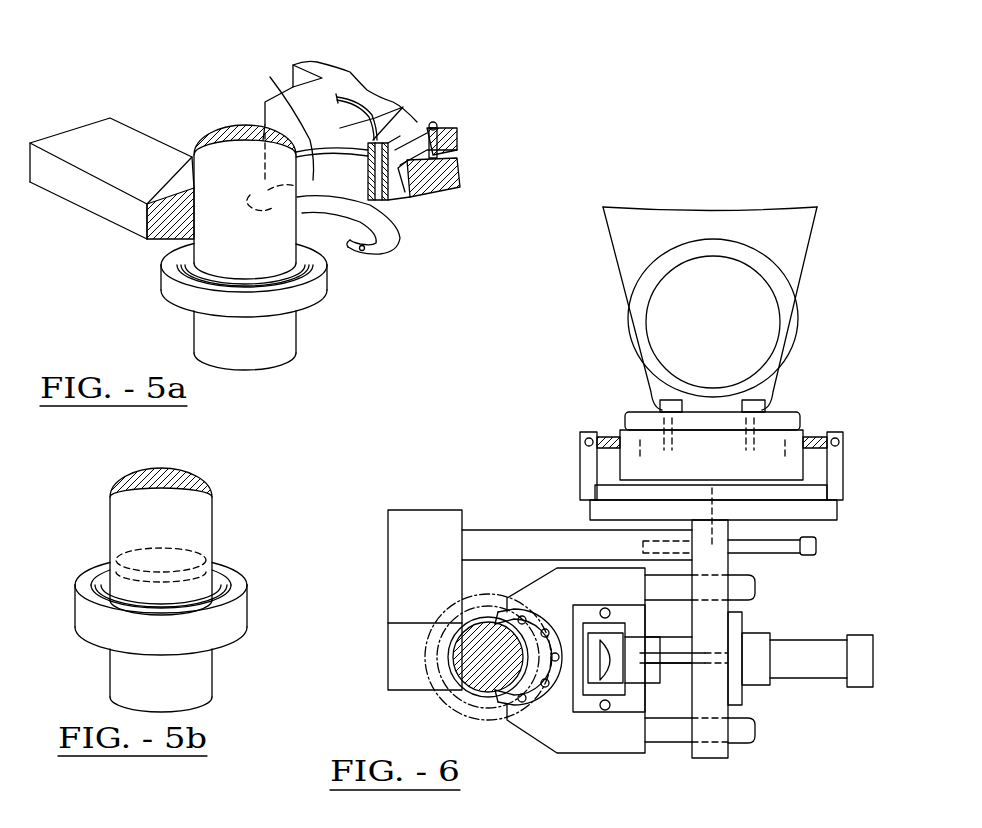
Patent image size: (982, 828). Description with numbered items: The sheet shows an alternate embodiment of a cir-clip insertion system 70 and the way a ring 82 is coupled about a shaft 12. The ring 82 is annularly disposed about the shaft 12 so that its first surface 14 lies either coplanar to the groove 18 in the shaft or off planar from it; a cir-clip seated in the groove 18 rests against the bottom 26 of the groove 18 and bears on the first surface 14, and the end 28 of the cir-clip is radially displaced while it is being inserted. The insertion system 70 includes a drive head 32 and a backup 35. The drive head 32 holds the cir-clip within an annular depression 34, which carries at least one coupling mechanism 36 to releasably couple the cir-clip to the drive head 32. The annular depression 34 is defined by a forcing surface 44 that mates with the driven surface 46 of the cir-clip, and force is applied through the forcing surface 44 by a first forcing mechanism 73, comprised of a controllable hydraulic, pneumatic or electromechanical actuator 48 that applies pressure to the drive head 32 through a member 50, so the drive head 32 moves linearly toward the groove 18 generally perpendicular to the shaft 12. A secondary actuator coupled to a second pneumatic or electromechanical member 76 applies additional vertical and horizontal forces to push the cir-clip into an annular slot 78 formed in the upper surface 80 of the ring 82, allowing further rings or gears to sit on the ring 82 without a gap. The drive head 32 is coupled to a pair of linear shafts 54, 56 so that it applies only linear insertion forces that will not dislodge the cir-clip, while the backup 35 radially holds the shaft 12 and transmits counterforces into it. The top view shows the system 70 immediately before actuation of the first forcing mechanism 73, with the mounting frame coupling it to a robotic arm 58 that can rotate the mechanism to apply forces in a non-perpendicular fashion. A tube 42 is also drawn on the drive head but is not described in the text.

In FIG. 5A, the shaft 12 is at (277, 352).
In FIG. 5A, the first surface 14 is at (327, 265).
In FIG. 5B, the first surface 14 is at (167, 622).
In FIG. 5A, the groove 18 is at (210, 267).
In FIG. 5B, the groove 18 is at (133, 610).
In FIG. 6, the groove 18 is at (488, 657).
In FIG. 5A, the bottom 26 is at (238, 268).
In FIG. 5A, the end 28 is at (370, 252).
In FIG. 5A, the drive head 32 is at (392, 105).
In FIG. 6, the drive head 32 is at (627, 743).
In FIG. 5A, the annular depression 34 is at (397, 208).
In FIG. 5A, the backup 35 is at (112, 203).
In FIG. 5A, the coupling mechanism 36 is at (397, 202).
In FIG. 5A, the tube 42 is at (372, 95).
In FIG. 5A, the forcing surface 44 is at (272, 82).
In FIG. 5A, the driven surface 46 is at (398, 236).
In FIG. 6, the controllable hydraulic, pneumatic actuator or electromechanical 48 is at (815, 650).
In FIG. 6, the member 50 is at (673, 662).
In FIG. 6, the linear shaft 54 is at (743, 593).
In FIG. 6, the linear shaft 56 is at (742, 737).
In FIG. 6, the robotic arm 58 is at (800, 253).
In FIG. 5A, the insertion system 70 is at (478, 71).
In FIG. 5A, the first forcing mechanism 73 is at (320, 65).
In FIG. 6, the first forcing mechanism 73 is at (803, 578).
In FIG. 5A, the second pneumatic or electromechanical member 76 is at (418, 122).
In FIG. 6, the second pneumatic or electromechanical member 76 is at (592, 678).
In FIG. 5A, the annular slot 78 is at (183, 257).
In FIG. 5B, the annular slot 78 is at (113, 607).
In FIG. 5B, the upper surface 80 is at (237, 585).
In FIG. 5A, the ring 82 is at (303, 300).
In FIG. 5B, the ring 82 is at (233, 623).